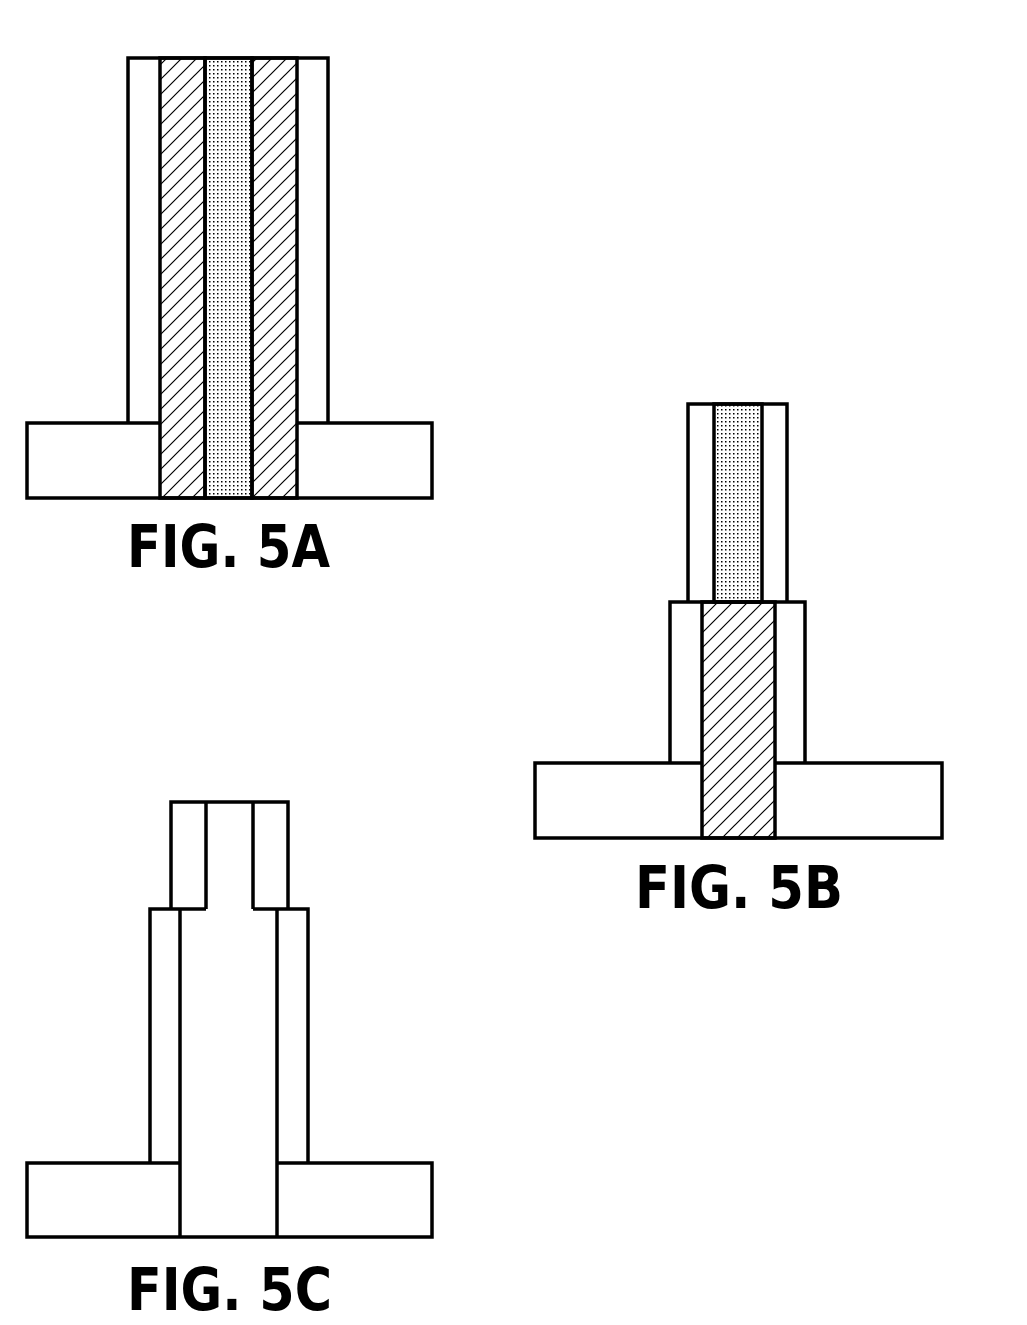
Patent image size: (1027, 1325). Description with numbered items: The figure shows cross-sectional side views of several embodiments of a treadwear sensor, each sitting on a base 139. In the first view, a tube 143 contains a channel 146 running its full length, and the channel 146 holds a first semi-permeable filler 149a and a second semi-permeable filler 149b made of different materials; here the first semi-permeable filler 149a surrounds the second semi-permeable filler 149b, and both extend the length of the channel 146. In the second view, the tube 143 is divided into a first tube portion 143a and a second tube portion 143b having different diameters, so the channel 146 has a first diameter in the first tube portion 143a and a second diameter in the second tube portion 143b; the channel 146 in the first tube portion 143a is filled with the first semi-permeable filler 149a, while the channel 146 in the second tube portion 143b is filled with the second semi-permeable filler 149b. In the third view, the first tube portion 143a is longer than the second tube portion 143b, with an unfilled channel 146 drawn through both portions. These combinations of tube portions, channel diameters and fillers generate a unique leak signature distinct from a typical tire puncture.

In FIG. 5A, the substrate 139 is at (432, 458).
In FIG. 5B, the substrate 139 is at (535, 802).
In FIG. 5C, the substrate 139 is at (432, 1200).
In FIG. 5A, the tube 143 is at (330, 240).
In FIG. 5B, the first tube portion 143a is at (670, 685).
In FIG. 5C, the first tube portion 143a is at (150, 1040).
In FIG. 5B, the second tube portion 143b is at (688, 502).
In FIG. 5C, the second tube portion 143b is at (171, 857).
In FIG. 5C, the channel 146 is at (227, 1037).
In FIG. 5A, the first semi-permeable filler 149a is at (274, 58).
In FIG. 5B, the first semi-permeable filler 149a is at (737, 685).
In FIG. 5A, the second semi-permeable filler 149b is at (229, 238).
In FIG. 5B, the second semi-permeable filler 149b is at (737, 403).